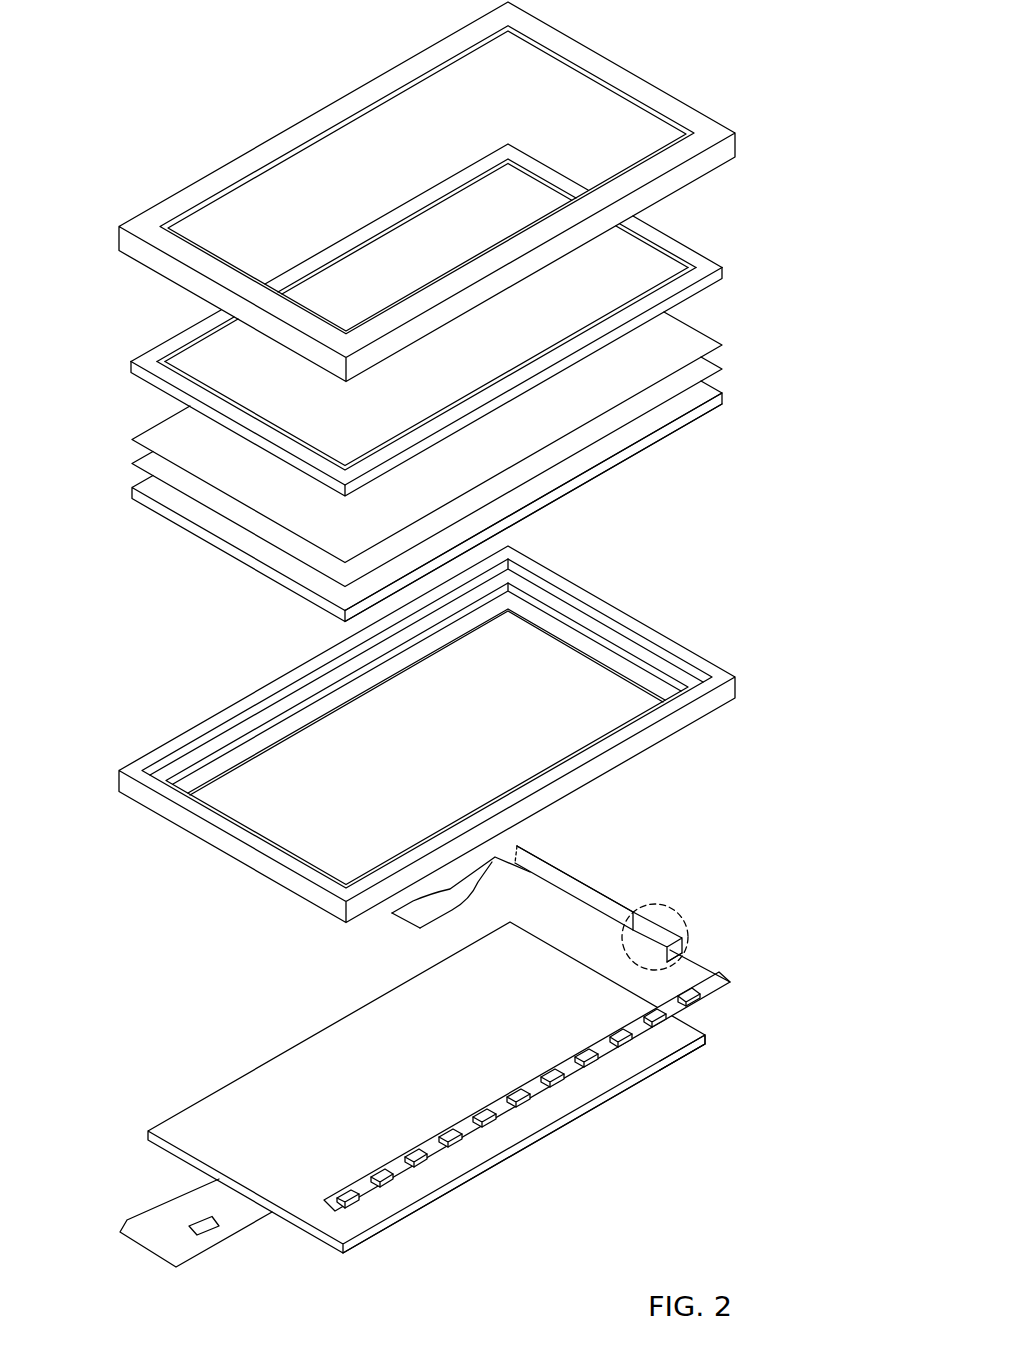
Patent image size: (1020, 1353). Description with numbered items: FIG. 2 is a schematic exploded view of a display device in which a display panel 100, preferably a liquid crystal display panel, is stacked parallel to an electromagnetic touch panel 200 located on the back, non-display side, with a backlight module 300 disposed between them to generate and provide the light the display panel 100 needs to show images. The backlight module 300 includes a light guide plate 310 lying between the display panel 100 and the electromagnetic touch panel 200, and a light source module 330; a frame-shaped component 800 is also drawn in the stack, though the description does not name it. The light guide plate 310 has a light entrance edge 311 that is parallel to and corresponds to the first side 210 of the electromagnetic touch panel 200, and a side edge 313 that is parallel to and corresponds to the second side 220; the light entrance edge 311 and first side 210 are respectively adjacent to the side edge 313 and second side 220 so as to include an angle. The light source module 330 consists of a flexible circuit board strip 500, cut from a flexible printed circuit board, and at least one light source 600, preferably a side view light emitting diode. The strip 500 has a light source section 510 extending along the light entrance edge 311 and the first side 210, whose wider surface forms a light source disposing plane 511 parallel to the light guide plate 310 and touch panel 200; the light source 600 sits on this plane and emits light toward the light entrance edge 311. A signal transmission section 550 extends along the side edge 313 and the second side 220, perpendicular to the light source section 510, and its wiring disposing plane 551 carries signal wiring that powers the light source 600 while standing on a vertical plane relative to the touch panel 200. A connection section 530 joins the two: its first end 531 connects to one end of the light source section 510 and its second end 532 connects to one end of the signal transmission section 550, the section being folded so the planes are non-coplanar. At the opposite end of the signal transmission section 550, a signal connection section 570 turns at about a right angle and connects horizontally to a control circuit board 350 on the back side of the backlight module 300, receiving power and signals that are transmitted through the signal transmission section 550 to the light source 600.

The display panel 100 is at (688, 254).
The electromagnetic touch panel 200 is at (217, 1117).
The first side 210 is at (519, 1153).
The second side 220 is at (687, 1018).
The backlight module 300 is at (740, 331).
The light guide plate 310 is at (150, 490).
The light entrance edge 311 is at (605, 460).
The side edge 313 is at (712, 386).
The light source module 330 is at (389, 1158).
The control circuit board 350 is at (157, 1248).
The flexible circuit board strip 500 is at (655, 880).
The light source section 510 is at (655, 992).
The light source disposing plane 511 is at (537, 1081).
The connection section 530 is at (648, 900).
The first end 531 is at (720, 987).
The second end 532 is at (667, 963).
The signal transmission section 550 is at (593, 905).
The wiring disposing plane 551 is at (556, 876).
The signal connection section 570 is at (472, 882).
The light source 600 is at (596, 1047).
The middle frame 800 is at (612, 612).